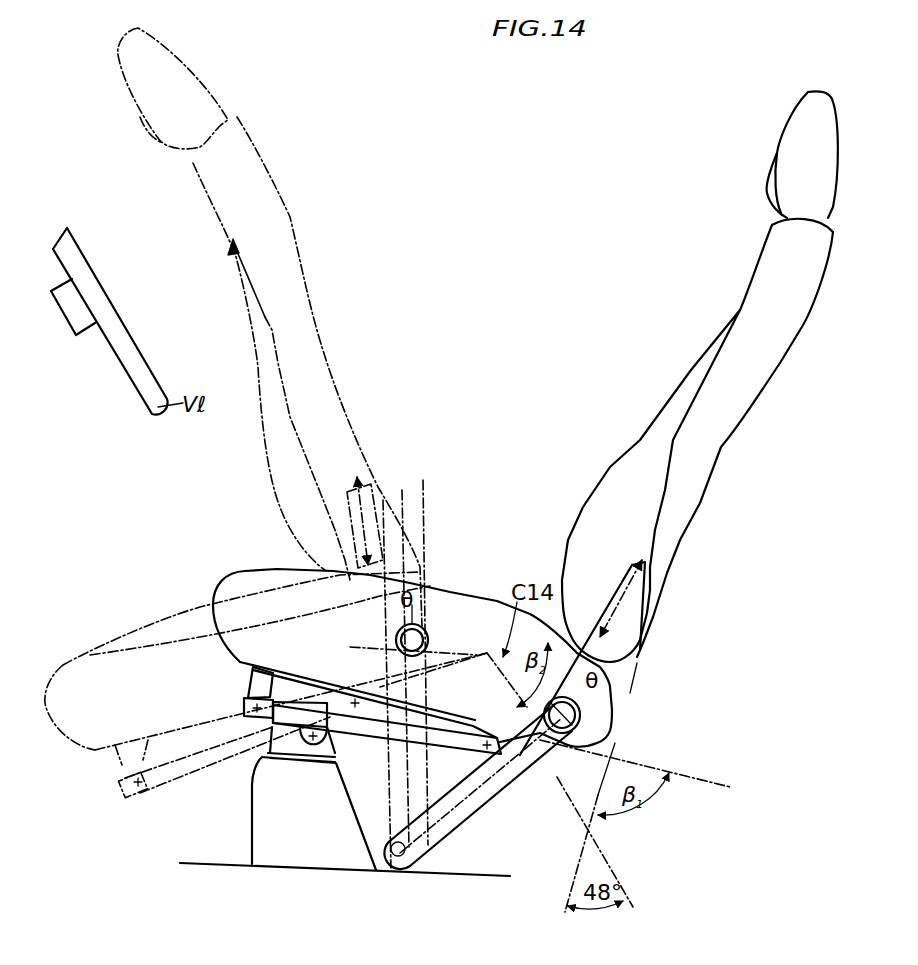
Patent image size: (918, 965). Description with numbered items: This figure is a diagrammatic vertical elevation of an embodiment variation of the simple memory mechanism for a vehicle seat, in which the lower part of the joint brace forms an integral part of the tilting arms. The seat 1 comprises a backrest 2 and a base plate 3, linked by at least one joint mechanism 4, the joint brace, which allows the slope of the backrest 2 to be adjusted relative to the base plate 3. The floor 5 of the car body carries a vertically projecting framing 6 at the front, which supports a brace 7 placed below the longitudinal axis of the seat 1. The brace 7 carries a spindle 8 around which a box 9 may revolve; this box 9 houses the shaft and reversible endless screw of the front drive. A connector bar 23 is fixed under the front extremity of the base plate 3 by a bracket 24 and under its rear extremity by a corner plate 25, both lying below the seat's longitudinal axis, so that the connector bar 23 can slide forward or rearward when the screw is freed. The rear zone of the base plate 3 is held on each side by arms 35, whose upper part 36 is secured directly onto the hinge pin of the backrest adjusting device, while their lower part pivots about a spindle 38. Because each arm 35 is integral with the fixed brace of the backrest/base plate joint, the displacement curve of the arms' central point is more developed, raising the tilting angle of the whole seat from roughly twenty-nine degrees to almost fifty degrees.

The seat 1 is at (556, 503).
The backrest 2 is at (673, 403).
The base plate 3 is at (153, 630).
The joint mechanism 4 is at (620, 688).
The floor 5 is at (222, 874).
The framing 6 is at (253, 832).
The brace 7 is at (288, 750).
The spindle 8 is at (312, 753).
The box 9 is at (297, 707).
The connector bar 23 is at (173, 773).
The bracket 24 is at (253, 680).
The corner plate 25 is at (393, 645).
The arm 35 is at (400, 803).
The upper part 36 is at (582, 720).
The spindle 38 is at (418, 863).